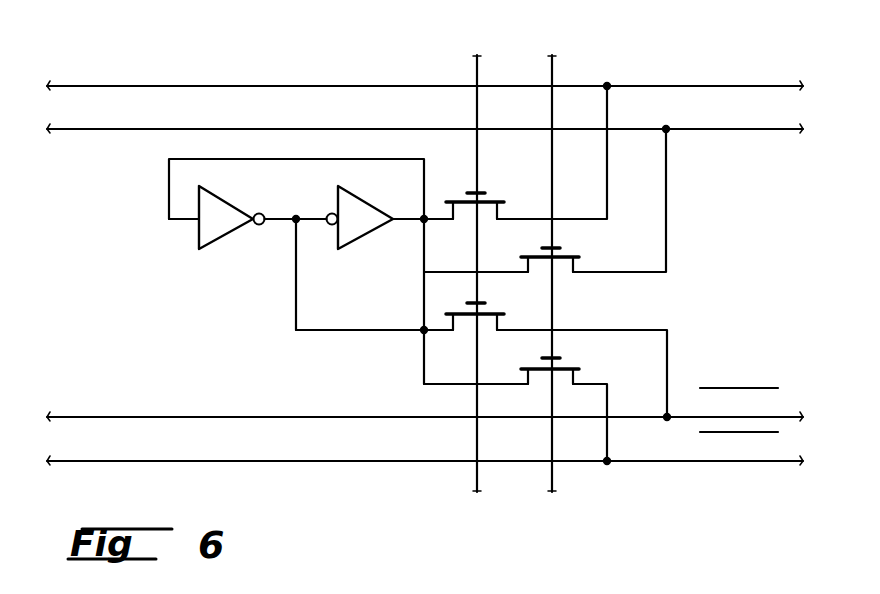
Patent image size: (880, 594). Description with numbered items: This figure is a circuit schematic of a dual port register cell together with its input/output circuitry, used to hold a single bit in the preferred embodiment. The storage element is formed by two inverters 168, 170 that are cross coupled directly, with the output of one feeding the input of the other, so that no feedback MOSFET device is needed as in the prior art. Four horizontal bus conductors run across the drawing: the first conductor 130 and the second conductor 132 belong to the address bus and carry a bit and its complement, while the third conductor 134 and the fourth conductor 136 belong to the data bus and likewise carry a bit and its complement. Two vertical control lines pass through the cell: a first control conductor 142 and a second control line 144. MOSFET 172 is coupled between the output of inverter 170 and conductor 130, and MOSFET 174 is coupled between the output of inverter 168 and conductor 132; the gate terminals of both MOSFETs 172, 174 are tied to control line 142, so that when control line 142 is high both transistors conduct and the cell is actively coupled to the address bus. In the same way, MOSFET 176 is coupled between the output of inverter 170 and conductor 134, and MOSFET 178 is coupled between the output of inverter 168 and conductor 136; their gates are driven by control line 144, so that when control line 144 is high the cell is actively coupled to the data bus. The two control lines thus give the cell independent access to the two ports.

The first conductor 130 is at (132, 88).
The third conductor 134 is at (132, 132).
The second conductor 132 is at (130, 417).
The fourth conductor 136 is at (130, 461).
The first control conductor 142 is at (475, 67).
The second control line 144 is at (551, 67).
The inverter 168 is at (236, 234).
The inverter 170 is at (372, 234).
The MOSFET 172 is at (493, 199).
The MOSFET 174 is at (490, 311).
The MOSFET 176 is at (566, 255).
The MOSFET 178 is at (566, 367).